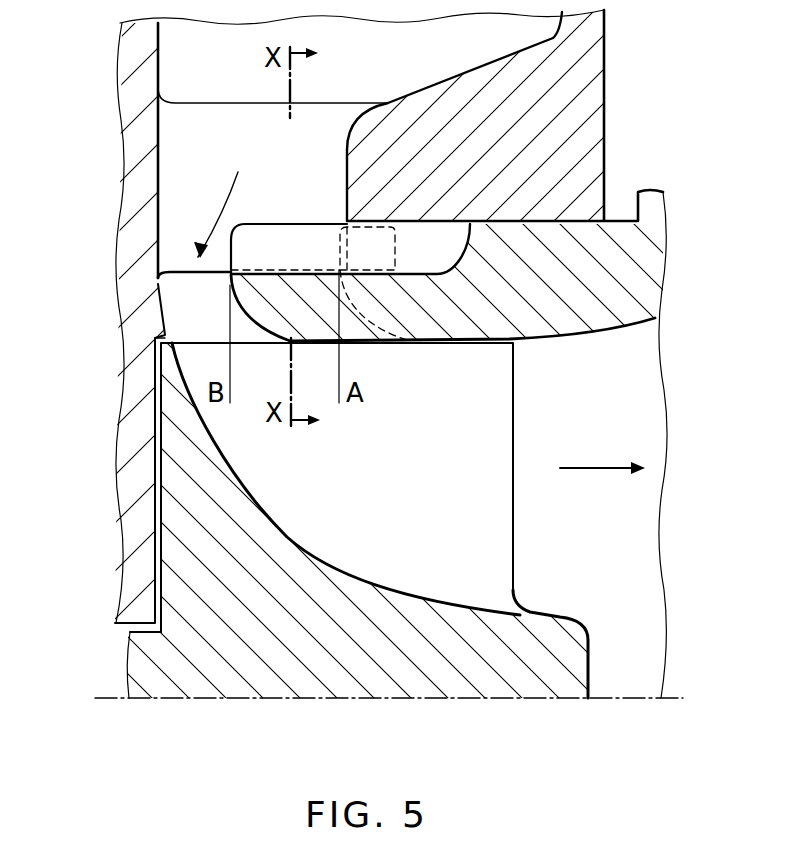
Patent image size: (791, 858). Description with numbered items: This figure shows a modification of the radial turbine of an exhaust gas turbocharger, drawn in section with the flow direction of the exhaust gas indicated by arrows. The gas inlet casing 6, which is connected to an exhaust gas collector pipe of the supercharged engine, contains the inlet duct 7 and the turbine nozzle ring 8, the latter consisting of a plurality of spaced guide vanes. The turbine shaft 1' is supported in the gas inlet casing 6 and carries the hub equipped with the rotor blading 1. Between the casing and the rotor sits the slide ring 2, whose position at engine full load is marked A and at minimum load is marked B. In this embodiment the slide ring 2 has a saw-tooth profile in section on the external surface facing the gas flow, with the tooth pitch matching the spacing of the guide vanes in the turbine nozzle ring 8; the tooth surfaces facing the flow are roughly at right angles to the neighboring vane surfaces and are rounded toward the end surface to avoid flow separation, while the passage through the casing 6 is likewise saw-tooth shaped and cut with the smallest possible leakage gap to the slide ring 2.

The rotor blading 1 is at (395, 429).
The turbine shaft 1' is at (614, 644).
The slide ring 2 is at (592, 308).
The gas inlet casing 6 is at (147, 63).
The inlet duct 7 is at (230, 58).
The turbine nozzle ring 8 is at (207, 126).